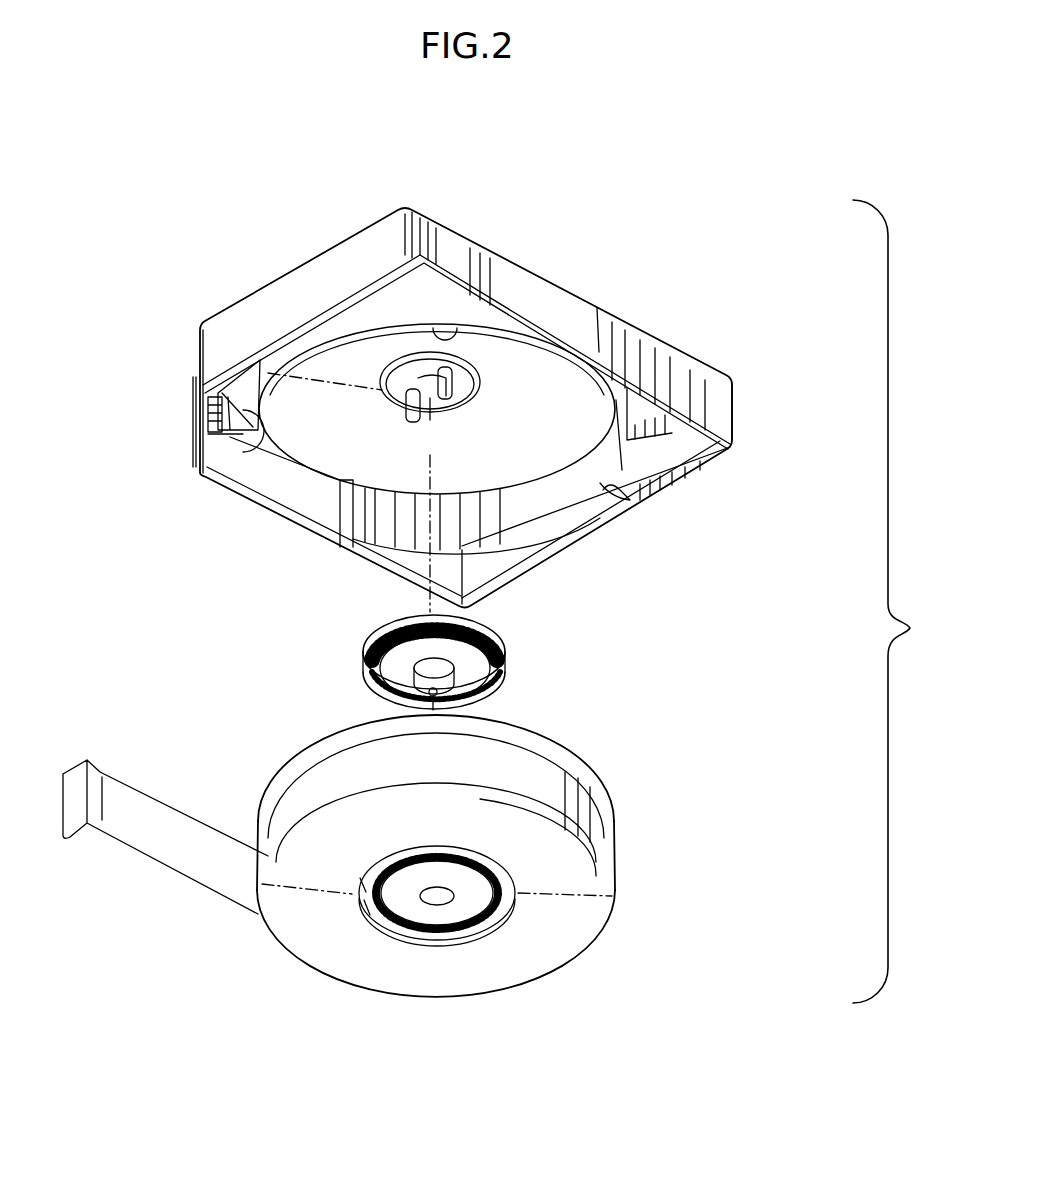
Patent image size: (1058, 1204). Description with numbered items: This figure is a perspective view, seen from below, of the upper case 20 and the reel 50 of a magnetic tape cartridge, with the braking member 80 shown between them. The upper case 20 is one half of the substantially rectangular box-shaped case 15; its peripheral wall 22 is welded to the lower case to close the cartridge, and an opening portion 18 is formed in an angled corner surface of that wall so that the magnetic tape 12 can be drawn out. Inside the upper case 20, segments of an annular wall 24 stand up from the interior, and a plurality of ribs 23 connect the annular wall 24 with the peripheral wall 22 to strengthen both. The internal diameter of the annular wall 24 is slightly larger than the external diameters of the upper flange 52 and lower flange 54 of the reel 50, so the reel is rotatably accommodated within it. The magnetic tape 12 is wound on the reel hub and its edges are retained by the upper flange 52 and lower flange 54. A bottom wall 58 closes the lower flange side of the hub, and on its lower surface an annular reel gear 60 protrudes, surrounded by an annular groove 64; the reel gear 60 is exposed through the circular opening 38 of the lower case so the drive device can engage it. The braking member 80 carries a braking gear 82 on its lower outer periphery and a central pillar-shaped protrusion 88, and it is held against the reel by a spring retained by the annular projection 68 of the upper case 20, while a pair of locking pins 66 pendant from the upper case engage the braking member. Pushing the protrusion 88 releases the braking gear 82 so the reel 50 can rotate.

The magnetic tape 12 is at (216, 872).
The case 15 is at (724, 366).
The opening portion 18 is at (193, 412).
The upper case 20 is at (466, 619).
The peripheral wall 22 is at (713, 418).
The ribs 23 is at (625, 478).
The annular wall 24 is at (444, 337).
The circular opening 38 is at (497, 913).
The reel 50 is at (484, 874).
The upper flange 52 is at (568, 763).
The lower flange 54 is at (577, 932).
The bottom wall 58 is at (363, 913).
The reel gear 60 is at (507, 880).
The annular groove 64 is at (363, 880).
The locking pins 66 is at (430, 420).
The annular projection 68 is at (480, 372).
The braking member 80 is at (455, 668).
The braking gear 82 is at (488, 690).
The protrusion 88 is at (416, 676).